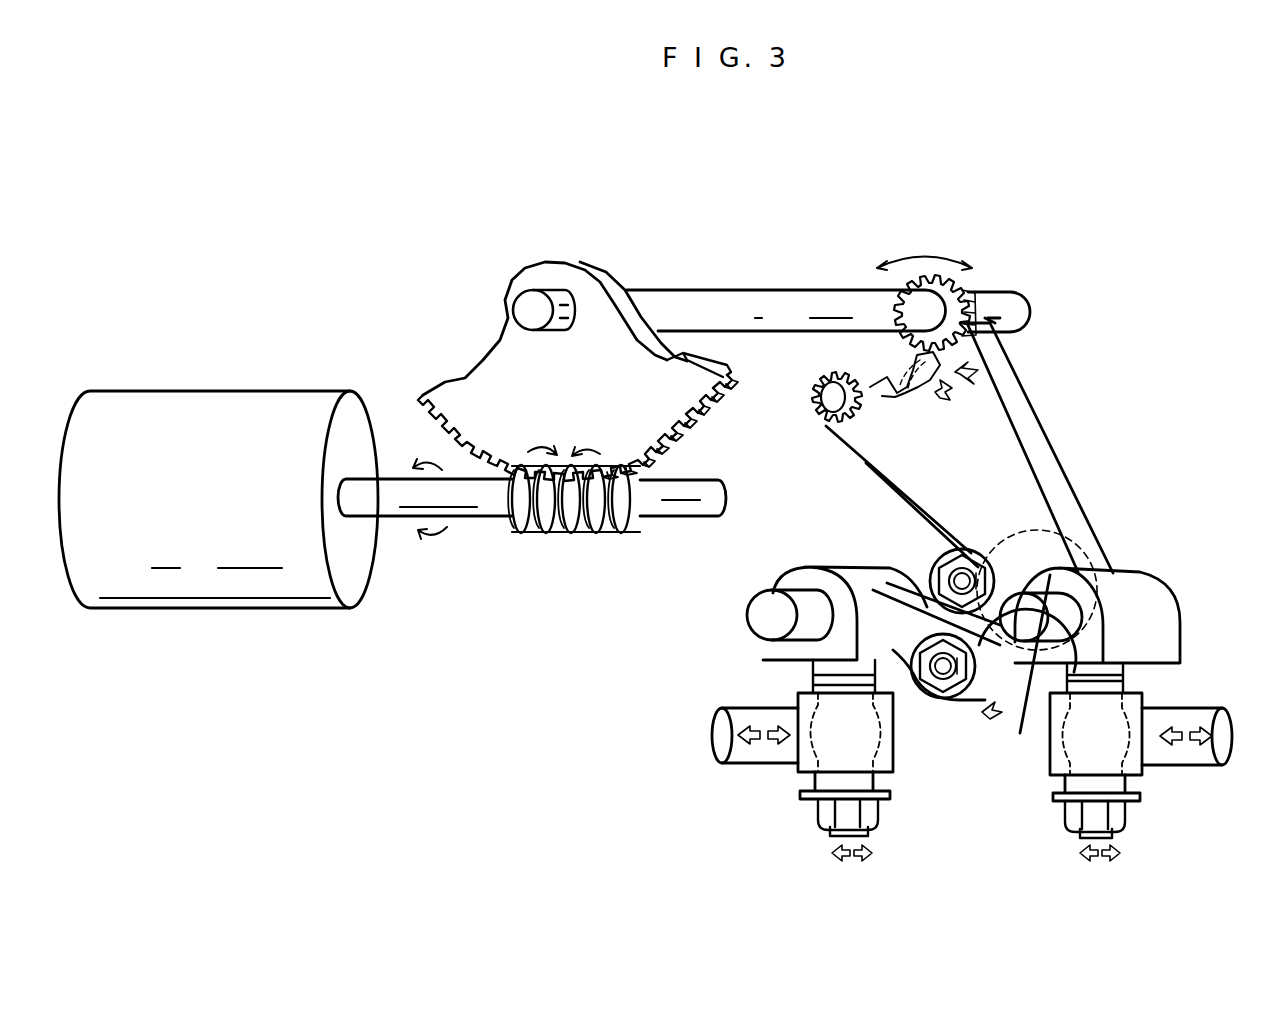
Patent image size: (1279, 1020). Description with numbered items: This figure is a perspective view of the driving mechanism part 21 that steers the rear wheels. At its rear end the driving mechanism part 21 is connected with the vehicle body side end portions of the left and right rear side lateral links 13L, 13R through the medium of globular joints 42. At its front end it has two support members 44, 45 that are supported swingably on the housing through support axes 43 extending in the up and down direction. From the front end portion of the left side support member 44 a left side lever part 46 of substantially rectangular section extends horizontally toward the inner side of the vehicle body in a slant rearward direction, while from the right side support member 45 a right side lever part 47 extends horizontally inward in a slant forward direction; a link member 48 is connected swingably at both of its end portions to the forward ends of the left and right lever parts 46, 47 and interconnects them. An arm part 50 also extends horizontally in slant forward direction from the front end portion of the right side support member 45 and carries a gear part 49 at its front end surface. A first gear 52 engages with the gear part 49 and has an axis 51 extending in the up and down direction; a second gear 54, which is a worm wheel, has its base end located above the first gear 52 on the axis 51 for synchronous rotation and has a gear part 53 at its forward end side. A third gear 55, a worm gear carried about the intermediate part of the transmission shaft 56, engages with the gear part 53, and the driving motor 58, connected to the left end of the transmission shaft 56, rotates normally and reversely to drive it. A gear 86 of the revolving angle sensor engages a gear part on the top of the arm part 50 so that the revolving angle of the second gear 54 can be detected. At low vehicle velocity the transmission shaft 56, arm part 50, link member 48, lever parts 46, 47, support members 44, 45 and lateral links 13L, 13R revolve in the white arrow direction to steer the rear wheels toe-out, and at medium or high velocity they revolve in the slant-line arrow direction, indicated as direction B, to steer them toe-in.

The driving motor 58 is at (202, 390).
The transmission shaft 56 is at (678, 518).
The third gear 55 is at (576, 535).
The gear part 53 is at (718, 417).
The second gear 54 is at (615, 281).
The axis 51 is at (750, 290).
The first gear 52 is at (962, 285).
The gear 86 is at (818, 388).
The gear part 49 is at (1005, 296).
The arm part 50 is at (1041, 409).
The link member 48 is at (1073, 493).
The support axes 43 is at (790, 597).
The left side lever part 46 is at (932, 582).
The right side lever part 47 is at (974, 673).
The globular joints 42 is at (880, 735).
The left rear side lateral link 13L is at (745, 708).
The right rear side lateral link 13R is at (1215, 708).
The left side support member 44 is at (880, 790).
The right side support member 45 is at (1125, 786).
The driving mechanism part 21 is at (649, 723).
The direction B is at (717, 793).